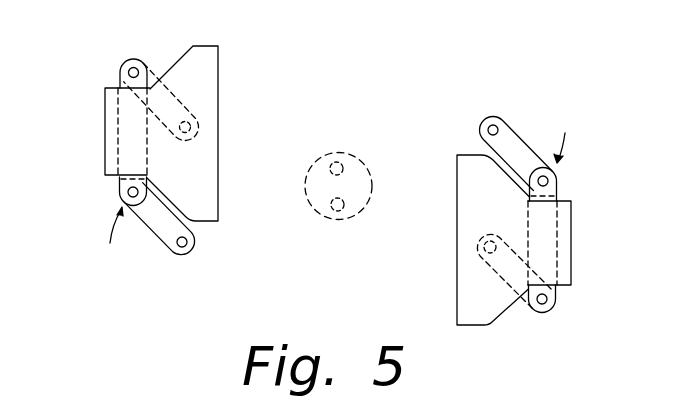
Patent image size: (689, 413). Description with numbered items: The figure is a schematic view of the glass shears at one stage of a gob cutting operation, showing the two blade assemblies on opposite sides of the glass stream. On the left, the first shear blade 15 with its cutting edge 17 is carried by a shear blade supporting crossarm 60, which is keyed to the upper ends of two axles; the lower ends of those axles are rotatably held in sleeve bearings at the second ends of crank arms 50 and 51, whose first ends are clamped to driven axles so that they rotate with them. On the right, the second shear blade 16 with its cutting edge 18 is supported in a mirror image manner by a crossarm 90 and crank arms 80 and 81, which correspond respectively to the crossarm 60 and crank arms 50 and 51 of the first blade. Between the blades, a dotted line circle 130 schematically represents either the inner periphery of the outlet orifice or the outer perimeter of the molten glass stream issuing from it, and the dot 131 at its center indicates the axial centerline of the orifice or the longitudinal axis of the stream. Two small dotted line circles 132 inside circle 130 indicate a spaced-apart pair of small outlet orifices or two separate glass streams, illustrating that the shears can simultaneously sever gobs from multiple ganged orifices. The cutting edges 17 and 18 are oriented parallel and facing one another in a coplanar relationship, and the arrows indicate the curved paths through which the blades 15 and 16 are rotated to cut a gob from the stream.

The first shear blade 15 is at (197, 186).
The second shear blade 16 is at (497, 212).
The cutting edge 17 is at (219, 89).
The cutting edge 18 is at (457, 283).
The crank arm 50 is at (150, 236).
The crank arm 51 is at (160, 84).
The shear blade supporting crossarm 60 is at (119, 193).
The crank arm 80 is at (522, 297).
The crank arm 81 is at (531, 148).
The shear blade supporting crossarm 90 is at (557, 192).
The dotted line circle 130 is at (342, 156).
The dot 131 is at (338, 187).
The small dotted line circles 132 is at (342, 172).